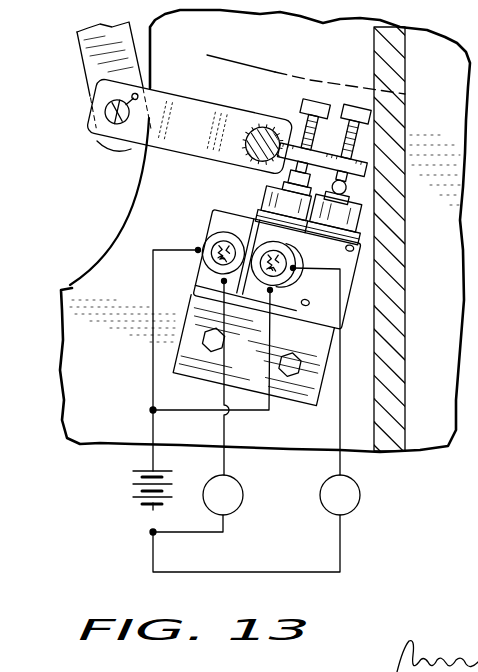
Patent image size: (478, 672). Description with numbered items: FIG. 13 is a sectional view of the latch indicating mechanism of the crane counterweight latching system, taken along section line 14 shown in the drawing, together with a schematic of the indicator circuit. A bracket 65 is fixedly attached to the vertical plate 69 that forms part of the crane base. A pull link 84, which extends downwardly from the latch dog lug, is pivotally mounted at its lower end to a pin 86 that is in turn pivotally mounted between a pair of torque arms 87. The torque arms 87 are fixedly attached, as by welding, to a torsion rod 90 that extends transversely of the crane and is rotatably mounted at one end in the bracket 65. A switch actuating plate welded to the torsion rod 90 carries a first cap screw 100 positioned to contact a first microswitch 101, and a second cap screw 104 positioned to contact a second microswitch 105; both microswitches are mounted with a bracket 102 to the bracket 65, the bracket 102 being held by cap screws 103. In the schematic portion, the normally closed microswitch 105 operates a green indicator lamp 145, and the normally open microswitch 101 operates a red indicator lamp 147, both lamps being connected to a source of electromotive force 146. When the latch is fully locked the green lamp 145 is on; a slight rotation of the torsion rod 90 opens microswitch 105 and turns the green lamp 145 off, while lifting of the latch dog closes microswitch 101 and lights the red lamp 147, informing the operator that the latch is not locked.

The section line 14- 14 is at (260, 40).
The bracket 65 is at (90, 282).
The vertical plate 69 is at (398, 330).
The pull link 84 is at (90, 50).
The pin 86 is at (120, 126).
The torque arm 87 is at (200, 146).
The torsion rod 90 is at (255, 129).
The first cap screw 100 is at (357, 108).
The first microswitch 101 is at (340, 264).
The bracket 102 is at (300, 400).
The cap screw 103 is at (306, 366).
The second cap screw 104 is at (312, 101).
The second microswitch 105 is at (233, 212).
The green indicator lamp 145 is at (224, 504).
The source of electromotive force 146 is at (130, 490).
The red indicator lamp 147 is at (352, 501).